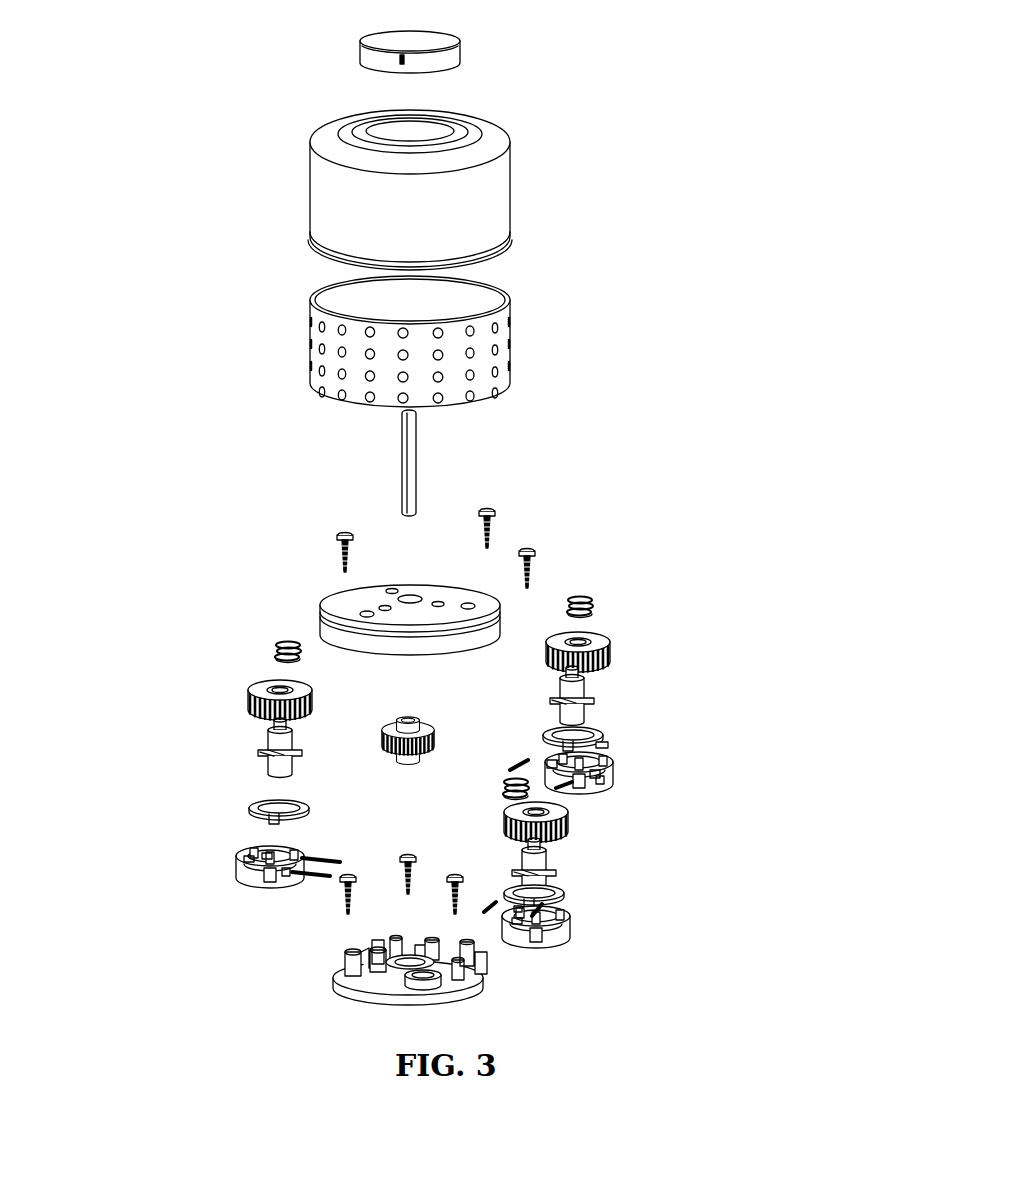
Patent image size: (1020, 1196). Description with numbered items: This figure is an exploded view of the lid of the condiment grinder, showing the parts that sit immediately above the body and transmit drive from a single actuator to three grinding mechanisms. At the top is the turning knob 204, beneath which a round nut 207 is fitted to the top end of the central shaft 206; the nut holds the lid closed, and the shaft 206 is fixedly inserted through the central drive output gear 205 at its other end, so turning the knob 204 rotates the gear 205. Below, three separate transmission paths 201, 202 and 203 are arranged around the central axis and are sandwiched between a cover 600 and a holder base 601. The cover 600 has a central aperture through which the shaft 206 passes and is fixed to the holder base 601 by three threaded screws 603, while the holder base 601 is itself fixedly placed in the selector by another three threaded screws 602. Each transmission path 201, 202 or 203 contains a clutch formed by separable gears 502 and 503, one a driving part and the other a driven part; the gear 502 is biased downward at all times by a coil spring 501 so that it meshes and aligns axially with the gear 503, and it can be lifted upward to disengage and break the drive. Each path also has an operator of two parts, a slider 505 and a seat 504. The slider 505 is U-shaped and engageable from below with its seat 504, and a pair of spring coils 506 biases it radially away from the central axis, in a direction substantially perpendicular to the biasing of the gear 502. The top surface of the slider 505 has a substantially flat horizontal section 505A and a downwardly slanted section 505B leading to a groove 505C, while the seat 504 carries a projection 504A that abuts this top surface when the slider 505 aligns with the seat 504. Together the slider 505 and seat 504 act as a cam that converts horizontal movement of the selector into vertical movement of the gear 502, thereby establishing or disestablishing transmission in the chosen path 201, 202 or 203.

The transmission path 201 is at (158, 640).
The transmission path 202 is at (646, 815).
The transmission path 203 is at (725, 585).
The turning knob 204 is at (548, 30).
The central drive output gear 205 is at (430, 732).
The central shaft 206 is at (409, 456).
The round nut 207 is at (452, 40).
The coil spring 501 is at (282, 648).
The gear 502 is at (250, 702).
The gear 503 is at (272, 747).
The seat 504 is at (258, 808).
The projection 504A is at (606, 744).
The slider 505 is at (244, 876).
The flat horizontal section 505A is at (244, 852).
The downwardly slanted section 505B is at (282, 852).
The groove 505C is at (284, 876).
The spring coils 506 is at (319, 860).
The cover 600 is at (325, 626).
The holder base 601 is at (478, 990).
The threaded screws 602 is at (362, 858).
The threaded screws 603 is at (338, 552).